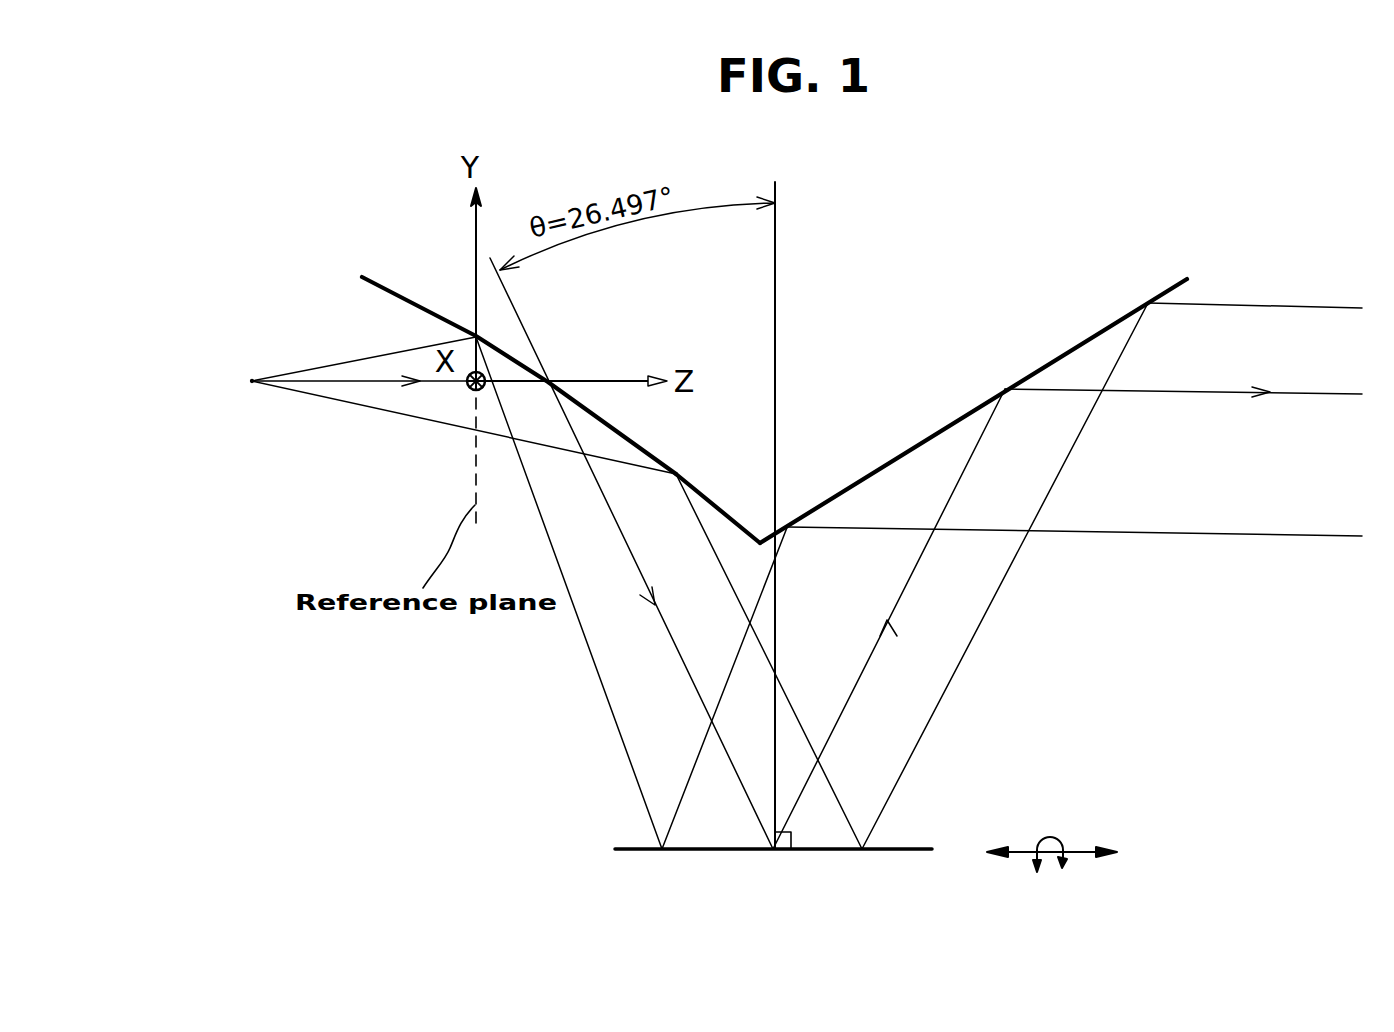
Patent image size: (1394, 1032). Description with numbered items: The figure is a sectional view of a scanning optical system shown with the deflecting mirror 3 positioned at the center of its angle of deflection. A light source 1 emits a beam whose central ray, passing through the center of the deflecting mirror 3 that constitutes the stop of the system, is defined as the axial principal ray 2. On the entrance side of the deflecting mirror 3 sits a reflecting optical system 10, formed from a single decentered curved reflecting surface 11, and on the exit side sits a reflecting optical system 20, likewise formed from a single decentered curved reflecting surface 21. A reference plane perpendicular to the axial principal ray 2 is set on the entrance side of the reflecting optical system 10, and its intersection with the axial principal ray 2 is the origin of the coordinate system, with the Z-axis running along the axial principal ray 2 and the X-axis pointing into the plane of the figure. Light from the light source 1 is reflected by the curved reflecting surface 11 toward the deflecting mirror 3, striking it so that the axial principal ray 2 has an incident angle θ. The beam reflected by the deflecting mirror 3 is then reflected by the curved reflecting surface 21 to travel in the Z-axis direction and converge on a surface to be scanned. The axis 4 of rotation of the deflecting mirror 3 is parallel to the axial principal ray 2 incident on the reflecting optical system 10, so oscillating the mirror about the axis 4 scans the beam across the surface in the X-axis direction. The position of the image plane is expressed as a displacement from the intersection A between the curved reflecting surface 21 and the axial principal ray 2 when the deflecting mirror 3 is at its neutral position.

The light source 1 is at (250, 389).
The axial principal ray 2 is at (367, 388).
The deflecting mirror 3 is at (741, 853).
The axis of rotation 4 is at (1080, 856).
The reflecting optical system 10 is at (683, 451).
The curved reflecting surface 11 is at (412, 300).
The reflecting optical system 20 is at (973, 391).
The curved reflecting surface 21 is at (1081, 335).
The intersection A is at (1007, 391).